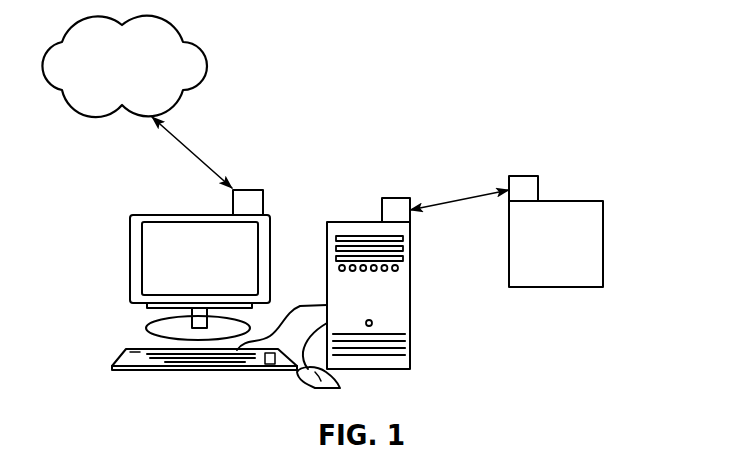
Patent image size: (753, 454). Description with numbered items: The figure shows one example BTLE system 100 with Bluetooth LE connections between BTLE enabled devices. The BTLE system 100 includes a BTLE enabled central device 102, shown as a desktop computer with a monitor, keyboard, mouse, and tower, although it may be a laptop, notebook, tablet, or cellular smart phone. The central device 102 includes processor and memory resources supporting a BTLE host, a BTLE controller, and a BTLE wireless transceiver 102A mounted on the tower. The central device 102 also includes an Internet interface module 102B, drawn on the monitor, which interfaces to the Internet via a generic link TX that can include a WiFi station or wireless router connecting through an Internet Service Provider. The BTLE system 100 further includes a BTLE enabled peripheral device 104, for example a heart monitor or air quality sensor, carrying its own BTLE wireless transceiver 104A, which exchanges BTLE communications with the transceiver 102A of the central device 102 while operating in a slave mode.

The BTLE system 100 is at (365, 202).
The BTLE enabled central device 102 is at (113, 210).
The BTLE wireless transceiver 102A is at (393, 197).
The Internet interface module 102B is at (250, 189).
The BTLE enabled peripheral device 104 is at (618, 191).
The BTLE wireless transceiver of peripheral device 104A is at (523, 175).
The generic link TX is at (204, 140).